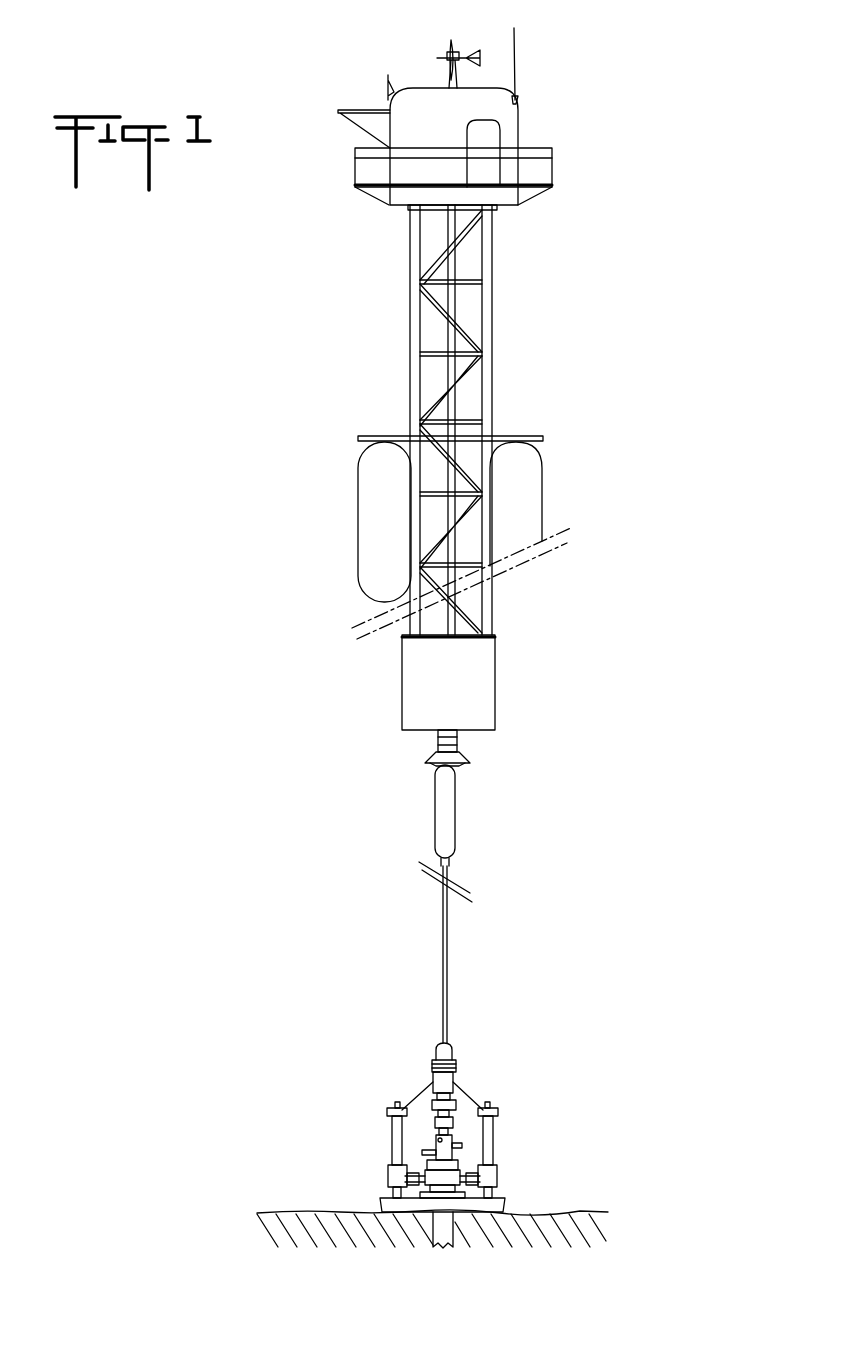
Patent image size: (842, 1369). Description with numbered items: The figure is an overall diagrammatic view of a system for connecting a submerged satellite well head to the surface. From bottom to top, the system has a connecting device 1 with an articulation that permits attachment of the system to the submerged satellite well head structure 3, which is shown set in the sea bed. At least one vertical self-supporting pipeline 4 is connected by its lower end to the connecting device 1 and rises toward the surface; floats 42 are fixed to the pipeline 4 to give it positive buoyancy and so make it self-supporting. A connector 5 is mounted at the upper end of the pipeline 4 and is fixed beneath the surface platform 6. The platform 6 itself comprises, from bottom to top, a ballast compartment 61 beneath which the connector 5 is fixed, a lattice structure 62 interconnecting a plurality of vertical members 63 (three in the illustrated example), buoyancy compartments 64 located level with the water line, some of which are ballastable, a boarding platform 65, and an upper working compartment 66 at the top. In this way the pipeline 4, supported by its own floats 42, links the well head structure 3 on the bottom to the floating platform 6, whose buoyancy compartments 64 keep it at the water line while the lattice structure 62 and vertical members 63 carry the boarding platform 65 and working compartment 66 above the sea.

The connecting device 1 is at (437, 1086).
The submerged satellite well head structure 3 is at (413, 1165).
The vertical self-supporting pipeline 4 is at (447, 1003).
The connector 5 is at (440, 745).
The surface platform 6 is at (390, 307).
The floats 42 is at (440, 824).
The ballast compartment 61 is at (472, 690).
The lattice structure 62 is at (463, 333).
The vertical members 63 is at (487, 388).
The buoyancy compartment 64 is at (380, 470).
The boarding platform 65 is at (377, 436).
The upper working compartment 66 is at (411, 174).